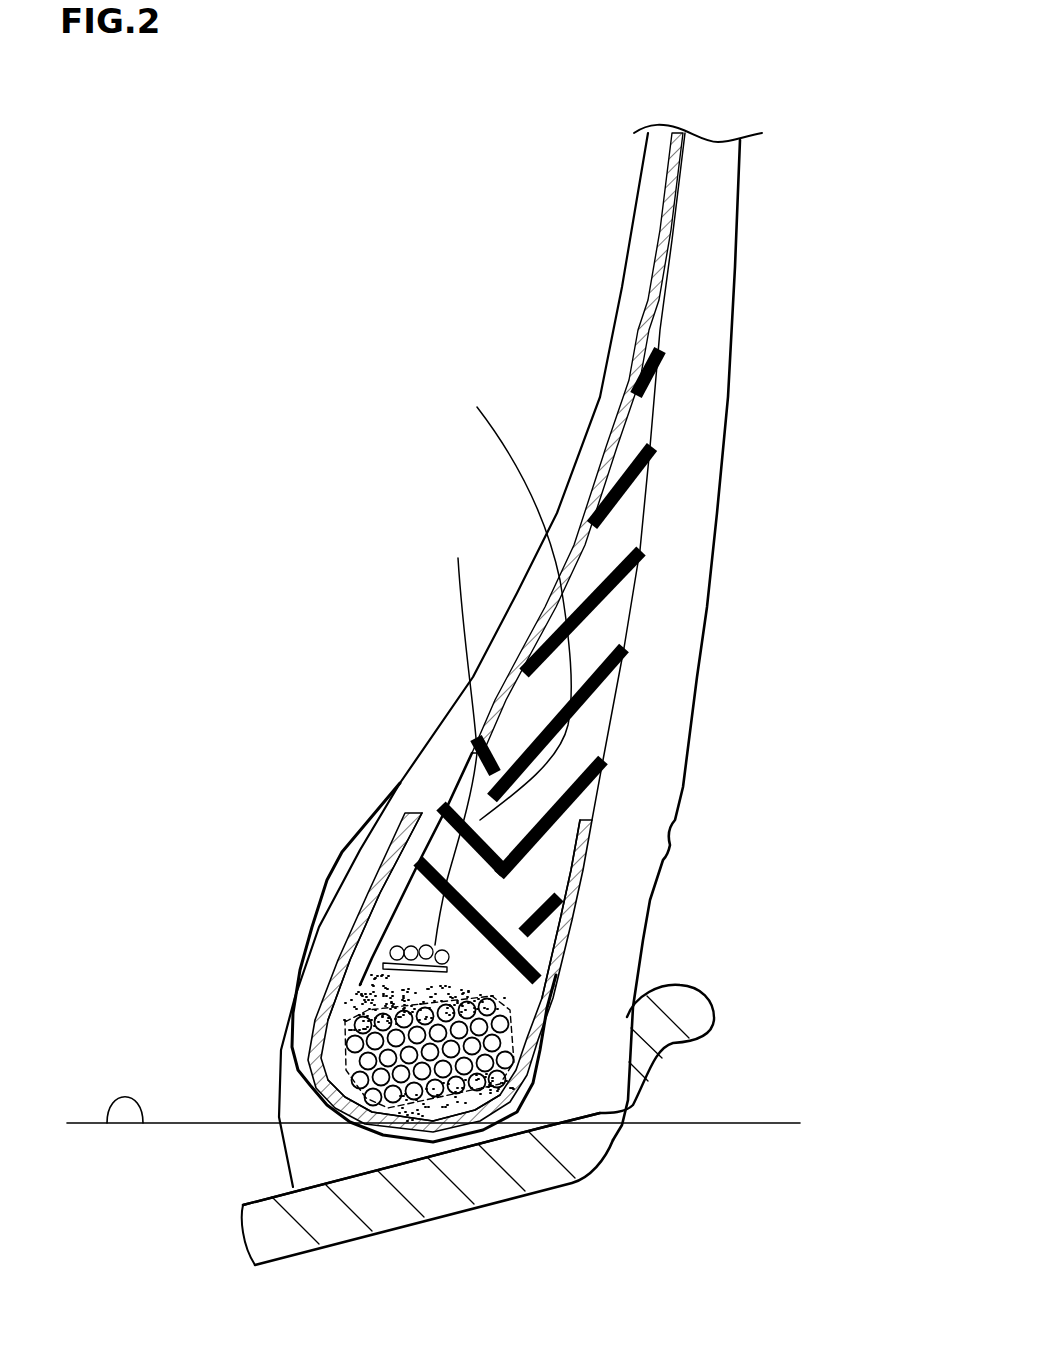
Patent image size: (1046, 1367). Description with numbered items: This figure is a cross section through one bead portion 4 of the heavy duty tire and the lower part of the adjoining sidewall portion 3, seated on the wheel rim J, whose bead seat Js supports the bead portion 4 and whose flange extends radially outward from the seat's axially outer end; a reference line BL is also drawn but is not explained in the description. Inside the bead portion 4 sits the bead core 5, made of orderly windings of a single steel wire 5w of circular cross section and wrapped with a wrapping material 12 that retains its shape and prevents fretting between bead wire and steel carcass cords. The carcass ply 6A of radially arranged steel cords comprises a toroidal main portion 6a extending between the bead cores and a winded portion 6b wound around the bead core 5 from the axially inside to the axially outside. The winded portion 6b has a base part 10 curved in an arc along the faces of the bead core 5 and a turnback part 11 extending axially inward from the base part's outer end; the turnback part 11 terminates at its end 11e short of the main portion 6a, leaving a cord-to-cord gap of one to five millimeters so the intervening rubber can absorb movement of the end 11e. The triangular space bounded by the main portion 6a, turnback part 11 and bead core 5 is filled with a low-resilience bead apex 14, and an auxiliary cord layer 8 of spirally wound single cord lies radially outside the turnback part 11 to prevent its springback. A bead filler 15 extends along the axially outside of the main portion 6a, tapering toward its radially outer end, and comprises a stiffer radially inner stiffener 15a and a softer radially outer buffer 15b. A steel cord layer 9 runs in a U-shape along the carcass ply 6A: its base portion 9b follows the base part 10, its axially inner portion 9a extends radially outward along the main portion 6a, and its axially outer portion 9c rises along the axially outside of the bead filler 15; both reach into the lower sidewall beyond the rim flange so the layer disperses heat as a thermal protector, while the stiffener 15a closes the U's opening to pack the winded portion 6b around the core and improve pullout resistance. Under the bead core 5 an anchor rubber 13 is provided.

The sidewall portion 3 is at (773, 253).
The bead portion 4 is at (207, 921).
The bead core 5 is at (352, 1018).
The steel wire 5w is at (395, 1104).
The carcass ply 6A is at (632, 206).
The main portion 6a is at (588, 533).
The winded portion 6b is at (838, 898).
The auxiliary cord layer 8 is at (430, 912).
The steel cord layer 9 is at (300, 1108).
The axially inner portion 9a is at (365, 925).
The base portion 9b is at (470, 1128).
The axially outer portion 9c is at (587, 840).
The base part 10 is at (646, 1100).
The turnback part 11 is at (450, 955).
The end of the turnback part 11e is at (392, 953).
The wrapping material 12 is at (345, 1012).
The anchor rubber 13 is at (461, 1112).
The bead apex 14 is at (456, 732).
The bead filler 15 is at (470, 316).
The stiffener 15a is at (505, 600).
The buffer 15b is at (640, 430).
The wheel rim J is at (615, 1170).
The bead seat Js is at (268, 1171).
The bead base line BL is at (107, 1123).